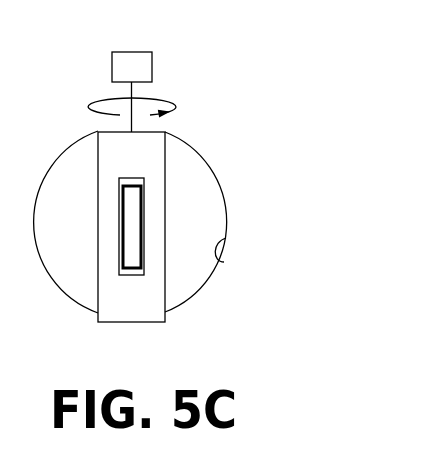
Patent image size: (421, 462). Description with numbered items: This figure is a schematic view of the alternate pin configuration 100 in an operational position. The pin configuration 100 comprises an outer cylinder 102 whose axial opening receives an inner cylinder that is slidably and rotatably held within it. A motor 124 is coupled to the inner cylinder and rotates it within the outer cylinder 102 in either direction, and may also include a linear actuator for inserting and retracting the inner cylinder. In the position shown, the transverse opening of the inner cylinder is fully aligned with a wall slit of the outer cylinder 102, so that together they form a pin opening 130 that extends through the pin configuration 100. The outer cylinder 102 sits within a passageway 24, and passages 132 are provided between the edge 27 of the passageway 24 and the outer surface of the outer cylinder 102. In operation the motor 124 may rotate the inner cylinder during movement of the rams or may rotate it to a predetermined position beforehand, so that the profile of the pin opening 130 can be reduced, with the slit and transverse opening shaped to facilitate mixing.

The pin configuration 100 is at (303, 92).
The motor 124 is at (152, 65).
The outer cylinder 102 is at (168, 130).
The passageway 24 is at (182, 190).
The pin opening 130 is at (145, 190).
The passages 132 is at (182, 220).
The edge 27 is at (222, 260).